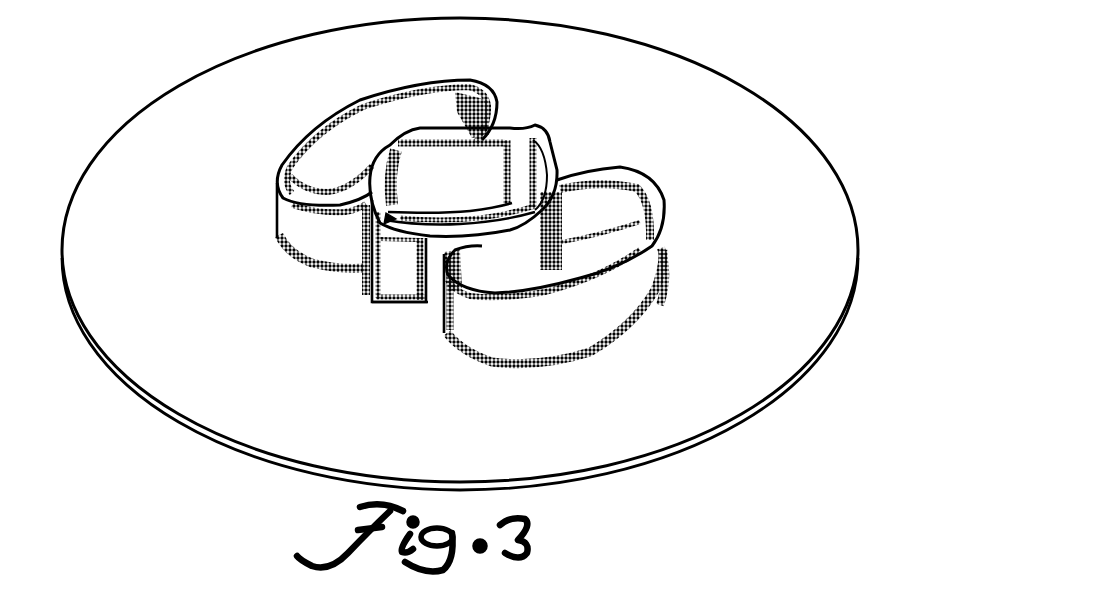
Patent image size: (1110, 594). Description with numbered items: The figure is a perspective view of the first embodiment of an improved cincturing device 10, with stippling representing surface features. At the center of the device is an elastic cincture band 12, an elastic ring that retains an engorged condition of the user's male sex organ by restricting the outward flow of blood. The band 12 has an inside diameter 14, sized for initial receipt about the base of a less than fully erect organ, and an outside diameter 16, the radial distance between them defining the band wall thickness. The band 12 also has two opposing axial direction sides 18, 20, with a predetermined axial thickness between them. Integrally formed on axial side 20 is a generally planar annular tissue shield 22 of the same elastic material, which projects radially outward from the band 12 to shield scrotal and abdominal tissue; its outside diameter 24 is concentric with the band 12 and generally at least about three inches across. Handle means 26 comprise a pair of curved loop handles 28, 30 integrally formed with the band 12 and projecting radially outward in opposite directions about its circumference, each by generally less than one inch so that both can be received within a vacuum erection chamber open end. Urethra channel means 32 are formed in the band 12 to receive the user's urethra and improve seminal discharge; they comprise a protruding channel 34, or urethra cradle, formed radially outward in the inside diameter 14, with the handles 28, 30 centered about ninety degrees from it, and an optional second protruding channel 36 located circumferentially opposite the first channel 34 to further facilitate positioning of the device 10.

The improved cincturing device 10 is at (460, 246).
The elastic cincture band 12 is at (506, 203).
The inside diameter 14 is at (471, 180).
The outside diameter 16 is at (526, 273).
The axial direction side 18 is at (385, 158).
The axial direction side 20 is at (440, 204).
The tissue shield 22 is at (206, 312).
The outside diameter of tissue shield 24 is at (217, 441).
The handle means 26 is at (373, 82).
The curved loop handle 28 is at (570, 334).
The curved loop handle 30 is at (360, 155).
The urethra channel means 32 is at (402, 316).
The protruding channel 34 is at (396, 251).
The second protruding channel 36 is at (517, 132).